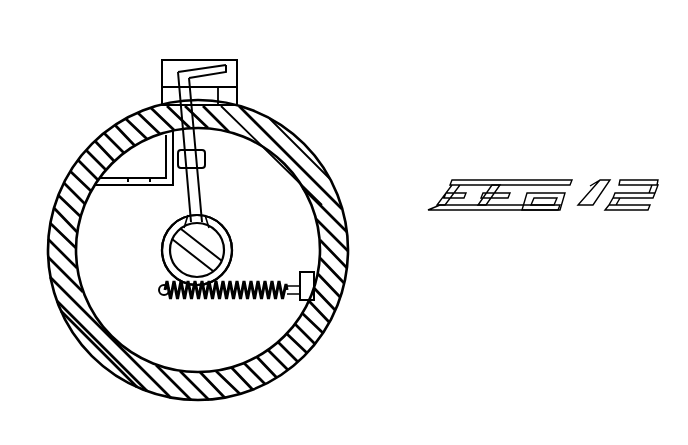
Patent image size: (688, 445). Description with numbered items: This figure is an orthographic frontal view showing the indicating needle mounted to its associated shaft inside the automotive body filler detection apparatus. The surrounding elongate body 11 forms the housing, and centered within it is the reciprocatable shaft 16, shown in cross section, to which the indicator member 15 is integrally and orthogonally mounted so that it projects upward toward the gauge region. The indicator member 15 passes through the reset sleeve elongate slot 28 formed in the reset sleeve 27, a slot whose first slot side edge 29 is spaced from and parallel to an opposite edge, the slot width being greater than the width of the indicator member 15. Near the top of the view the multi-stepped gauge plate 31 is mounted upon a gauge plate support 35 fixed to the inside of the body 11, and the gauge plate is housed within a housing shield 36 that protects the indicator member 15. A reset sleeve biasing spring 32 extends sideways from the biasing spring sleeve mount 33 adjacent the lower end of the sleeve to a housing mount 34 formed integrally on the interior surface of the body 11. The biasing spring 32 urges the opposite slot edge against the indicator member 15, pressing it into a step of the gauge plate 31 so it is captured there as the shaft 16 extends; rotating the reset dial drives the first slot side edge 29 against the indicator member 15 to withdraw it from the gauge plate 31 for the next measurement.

The elongate body 11 is at (268, 128).
The indicator member 15 is at (205, 184).
The reciprocatable shaft 16 is at (166, 257).
The reset sleeve 27 is at (217, 226).
The reset sleeve elongate slot 28 is at (220, 213).
The first slot side edge 29 is at (183, 218).
The multi-stepped gauge plate 31 is at (206, 158).
The reset sleeve biasing spring 32 is at (247, 277).
The biasing spring sleeve mount 33 is at (166, 289).
The housing mount 34 is at (312, 273).
The gauge plate support 35 is at (143, 187).
The housing shield 36 is at (238, 60).